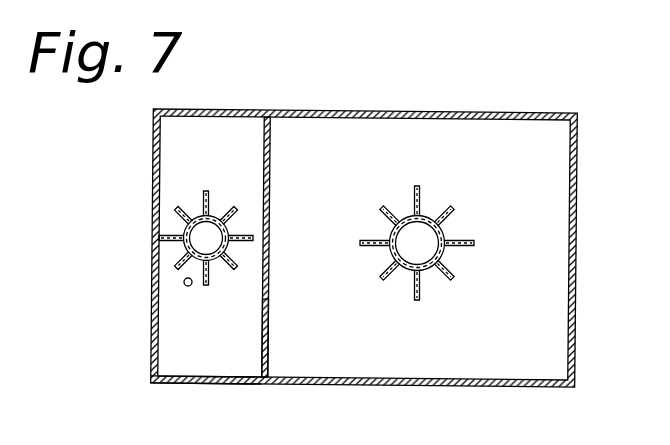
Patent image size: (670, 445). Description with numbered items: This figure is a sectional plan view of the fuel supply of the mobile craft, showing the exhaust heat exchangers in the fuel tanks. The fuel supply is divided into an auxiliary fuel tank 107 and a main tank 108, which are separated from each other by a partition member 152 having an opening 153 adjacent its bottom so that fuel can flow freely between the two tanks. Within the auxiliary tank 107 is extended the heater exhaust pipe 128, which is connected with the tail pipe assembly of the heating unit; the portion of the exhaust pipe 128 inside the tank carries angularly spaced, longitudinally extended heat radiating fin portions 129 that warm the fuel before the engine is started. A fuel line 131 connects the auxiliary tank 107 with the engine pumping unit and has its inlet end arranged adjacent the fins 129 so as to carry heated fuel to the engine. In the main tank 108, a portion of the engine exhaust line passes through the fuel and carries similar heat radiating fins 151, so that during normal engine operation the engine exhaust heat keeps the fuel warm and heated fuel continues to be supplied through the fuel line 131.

The auxiliary fuel tank 107 is at (215, 360).
The main tank 108 is at (542, 363).
The exhaust pipe 128 is at (242, 217).
The heat radiating fin portions 129 is at (222, 177).
The fuel line 131 is at (188, 286).
The heat radiating fins 151 is at (445, 226).
The partition member 152 is at (269, 344).
The opening 153 is at (269, 128).